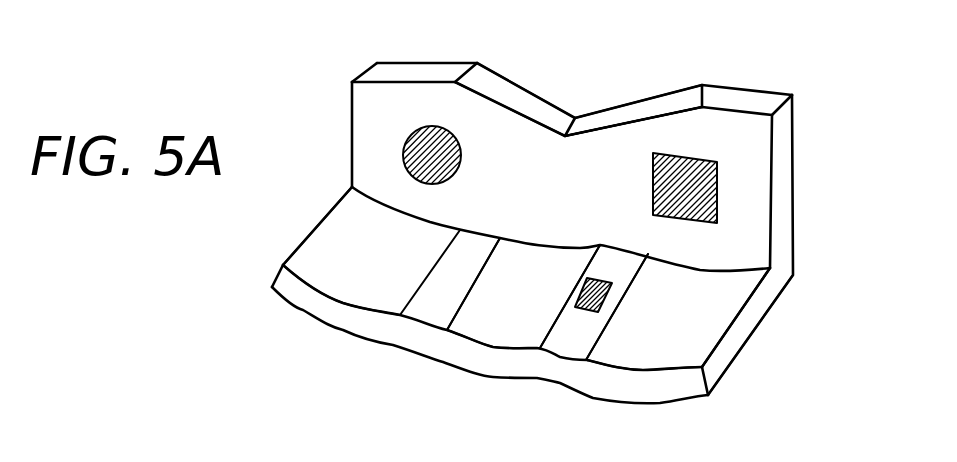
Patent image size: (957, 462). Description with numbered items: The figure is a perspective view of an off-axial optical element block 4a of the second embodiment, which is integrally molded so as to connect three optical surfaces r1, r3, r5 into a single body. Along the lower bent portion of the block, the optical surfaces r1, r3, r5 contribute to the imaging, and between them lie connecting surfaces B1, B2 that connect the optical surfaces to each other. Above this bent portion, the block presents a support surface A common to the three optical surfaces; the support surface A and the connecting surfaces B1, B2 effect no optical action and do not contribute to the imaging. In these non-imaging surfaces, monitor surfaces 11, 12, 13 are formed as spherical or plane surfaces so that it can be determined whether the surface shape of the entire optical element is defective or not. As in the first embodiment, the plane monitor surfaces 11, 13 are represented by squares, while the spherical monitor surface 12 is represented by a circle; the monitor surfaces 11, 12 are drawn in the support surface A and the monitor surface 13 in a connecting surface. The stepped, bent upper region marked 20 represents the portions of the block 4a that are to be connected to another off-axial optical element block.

The portions to be connected 20 is at (603, 117).
The support surface A is at (622, 152).
The monitor surface 11 is at (693, 153).
The monitor surface 12 is at (461, 155).
The monitor surface 13 is at (602, 300).
The off-axial optical element block 4a is at (773, 292).
The optical surface r5 is at (353, 292).
The connecting surface B2 is at (430, 318).
The optical surface r3 is at (503, 328).
The connecting surface B1 is at (568, 348).
The optical surface r1 is at (660, 357).